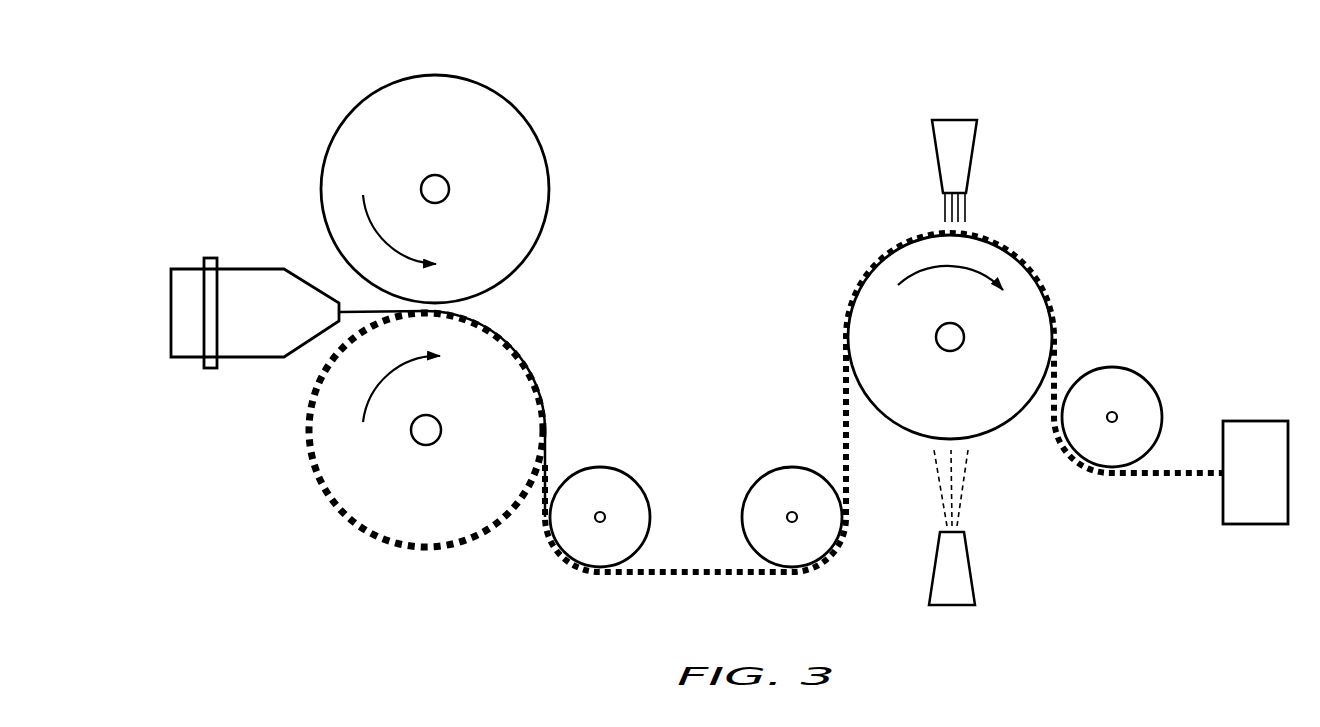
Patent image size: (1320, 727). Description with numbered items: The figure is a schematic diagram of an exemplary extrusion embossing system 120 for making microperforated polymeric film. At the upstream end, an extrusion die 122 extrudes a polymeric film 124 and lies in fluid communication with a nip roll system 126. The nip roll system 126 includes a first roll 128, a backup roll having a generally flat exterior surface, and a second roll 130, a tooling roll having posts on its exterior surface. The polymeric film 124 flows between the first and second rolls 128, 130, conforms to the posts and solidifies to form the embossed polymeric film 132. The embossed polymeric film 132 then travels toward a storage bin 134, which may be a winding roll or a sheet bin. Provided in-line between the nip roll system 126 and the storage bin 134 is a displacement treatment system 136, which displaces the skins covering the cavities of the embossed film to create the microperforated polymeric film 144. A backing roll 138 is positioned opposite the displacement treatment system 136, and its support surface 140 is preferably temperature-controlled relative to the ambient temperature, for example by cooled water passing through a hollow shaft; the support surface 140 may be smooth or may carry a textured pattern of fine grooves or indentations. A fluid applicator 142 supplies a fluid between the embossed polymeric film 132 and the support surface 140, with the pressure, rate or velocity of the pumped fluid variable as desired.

The extrusion embossing system 120 is at (206, 70).
The extrusion die 122 is at (244, 275).
The polymeric film 124 is at (358, 308).
The nip roll system 126 is at (552, 114).
The first roll 128 is at (517, 241).
The second roll 130 is at (355, 485).
The embossed polymeric film 132 is at (698, 565).
The storage bin 134 is at (1257, 524).
The displacement treatment system 136 is at (960, 133).
The backing roll 138 is at (1032, 312).
The support surface 140 is at (1008, 430).
The fluid applicator 142 is at (973, 577).
The microperforated polymeric film 144 is at (1132, 465).